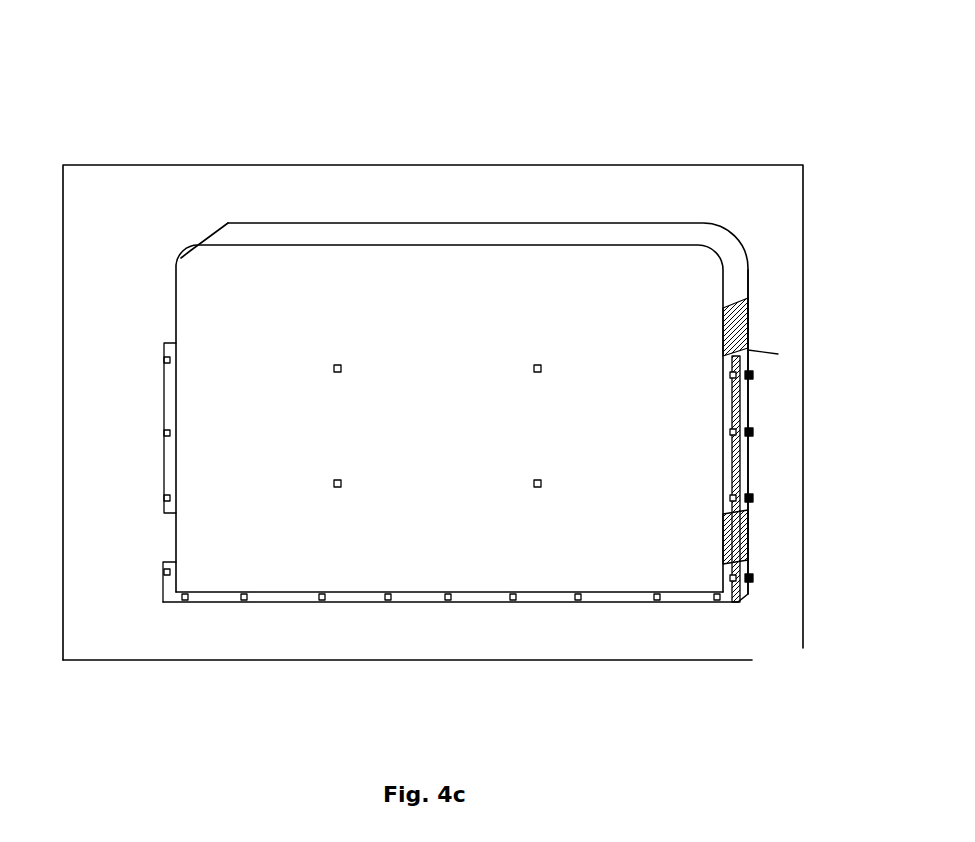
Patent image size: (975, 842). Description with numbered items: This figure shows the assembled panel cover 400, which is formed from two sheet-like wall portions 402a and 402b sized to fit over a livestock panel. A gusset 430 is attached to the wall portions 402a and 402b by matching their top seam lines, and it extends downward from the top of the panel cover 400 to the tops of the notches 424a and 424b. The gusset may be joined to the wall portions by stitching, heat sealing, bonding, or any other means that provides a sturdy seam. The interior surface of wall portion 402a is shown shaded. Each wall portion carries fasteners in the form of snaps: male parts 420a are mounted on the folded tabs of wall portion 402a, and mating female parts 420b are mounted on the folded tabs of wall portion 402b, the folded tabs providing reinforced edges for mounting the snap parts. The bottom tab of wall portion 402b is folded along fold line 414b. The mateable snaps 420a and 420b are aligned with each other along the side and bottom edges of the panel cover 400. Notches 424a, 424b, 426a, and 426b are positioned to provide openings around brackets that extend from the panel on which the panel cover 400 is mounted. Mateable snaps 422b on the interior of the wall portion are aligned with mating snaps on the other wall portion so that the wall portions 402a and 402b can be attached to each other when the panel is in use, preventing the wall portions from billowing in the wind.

The panel cover 400 is at (298, 133).
The gusset 430 is at (238, 232).
The wall portion 402b is at (432, 313).
The wall portion 402a is at (742, 321).
The notch 424a is at (748, 319).
The notch 424b is at (723, 325).
The notch 426a is at (748, 535).
The notch 426b is at (177, 518).
The male snap parts 420a is at (753, 498).
The female snap parts 420b is at (164, 498).
The mateable snaps 422b is at (338, 372).
The fold line 414b is at (433, 455).